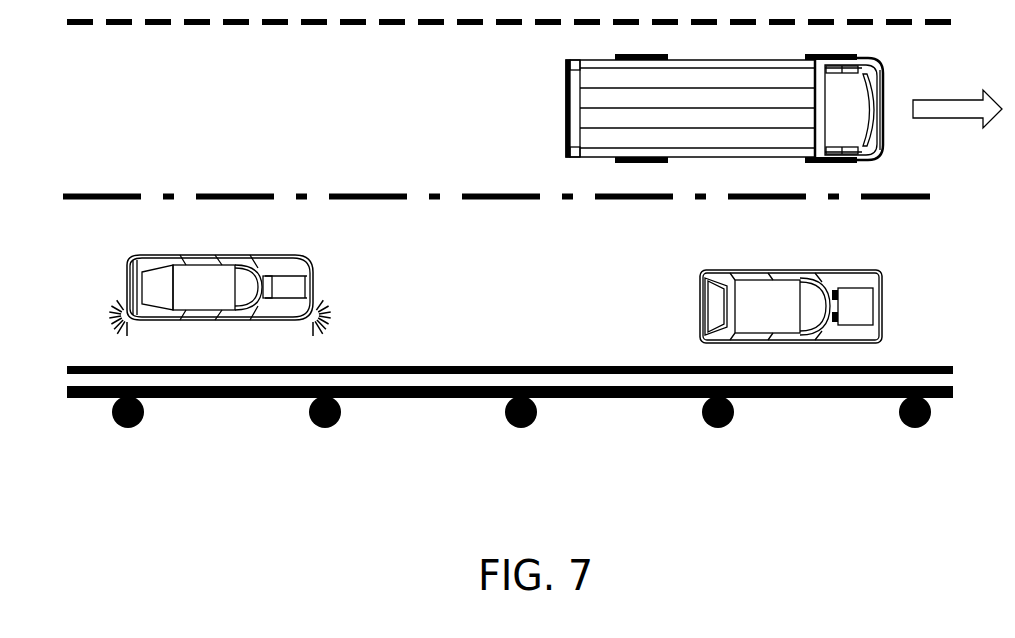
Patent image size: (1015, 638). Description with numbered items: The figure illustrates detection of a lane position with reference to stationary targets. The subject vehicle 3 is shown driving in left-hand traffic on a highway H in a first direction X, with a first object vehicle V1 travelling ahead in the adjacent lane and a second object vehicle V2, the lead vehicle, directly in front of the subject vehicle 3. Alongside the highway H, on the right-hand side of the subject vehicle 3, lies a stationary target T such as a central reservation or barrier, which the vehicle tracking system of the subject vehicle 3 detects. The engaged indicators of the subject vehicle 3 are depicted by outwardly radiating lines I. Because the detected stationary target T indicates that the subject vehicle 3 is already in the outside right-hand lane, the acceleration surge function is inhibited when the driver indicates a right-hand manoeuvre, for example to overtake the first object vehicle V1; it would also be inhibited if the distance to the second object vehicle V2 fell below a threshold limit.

The subject vehicle 3 is at (219, 305).
The first object vehicle V1 is at (858, 125).
The second object vehicle V2 is at (870, 302).
The first direction X is at (957, 98).
The highway H is at (450, 352).
The stationary target T is at (623, 388).
The indicator lines I is at (145, 330).